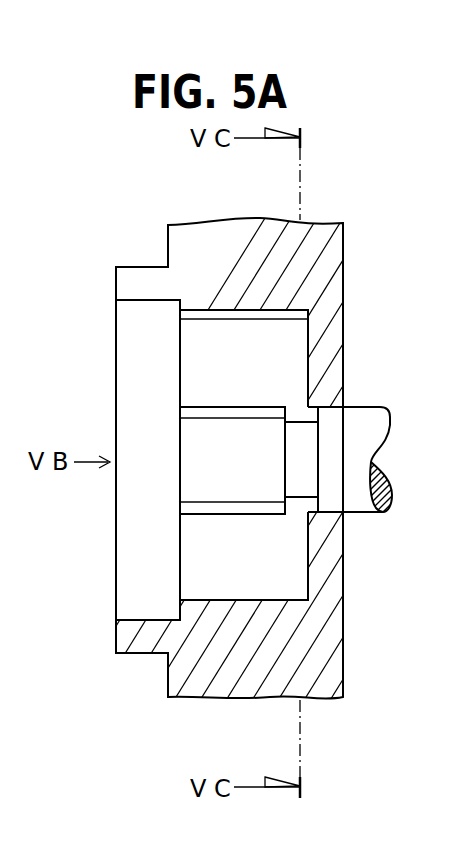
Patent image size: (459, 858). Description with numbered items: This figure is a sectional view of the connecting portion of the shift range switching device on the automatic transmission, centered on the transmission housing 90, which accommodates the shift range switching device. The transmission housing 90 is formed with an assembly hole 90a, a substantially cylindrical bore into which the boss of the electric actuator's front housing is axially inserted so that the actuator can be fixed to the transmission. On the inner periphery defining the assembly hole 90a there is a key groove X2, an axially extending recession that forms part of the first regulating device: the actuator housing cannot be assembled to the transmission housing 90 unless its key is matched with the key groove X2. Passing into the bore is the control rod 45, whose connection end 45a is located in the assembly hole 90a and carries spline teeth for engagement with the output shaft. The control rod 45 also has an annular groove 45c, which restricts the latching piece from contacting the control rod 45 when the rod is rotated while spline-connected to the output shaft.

The transmission housing 90 is at (178, 243).
The assembly hole 90a is at (205, 558).
The key groove X2 is at (205, 314).
The control rod 45 is at (352, 420).
The connection end 45a is at (197, 445).
The annular groove 45c is at (305, 462).